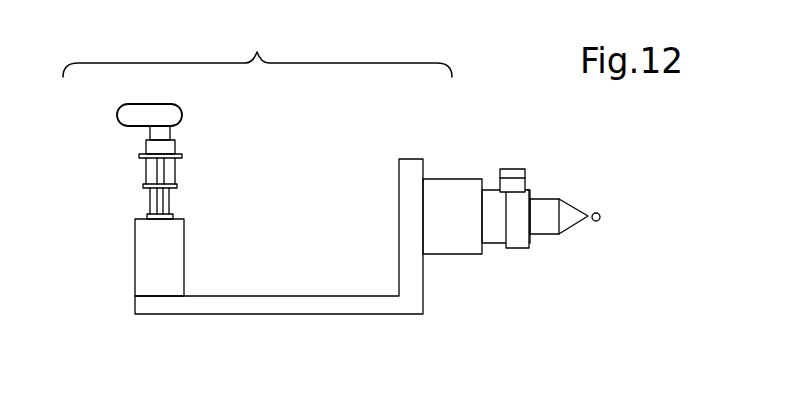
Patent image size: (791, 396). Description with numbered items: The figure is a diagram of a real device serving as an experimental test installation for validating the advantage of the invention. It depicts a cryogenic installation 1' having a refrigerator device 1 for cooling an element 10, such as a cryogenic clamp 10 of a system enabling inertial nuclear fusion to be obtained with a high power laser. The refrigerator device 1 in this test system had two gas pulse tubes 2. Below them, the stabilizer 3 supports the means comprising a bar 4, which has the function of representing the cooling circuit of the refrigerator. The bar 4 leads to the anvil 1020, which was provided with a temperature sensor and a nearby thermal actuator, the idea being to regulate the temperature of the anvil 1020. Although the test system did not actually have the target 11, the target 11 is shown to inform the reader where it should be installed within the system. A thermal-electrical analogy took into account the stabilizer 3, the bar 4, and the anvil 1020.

The refrigerator device 1 is at (257, 48).
The gas pulse tube 2 is at (188, 106).
The stabilizer 3 is at (126, 263).
The bar 4 is at (277, 288).
The anvil 1020 is at (457, 171).
The cryogenic clamp 10 is at (493, 266).
The cryogenic installation 1' is at (583, 180).
The target 11 is at (597, 232).